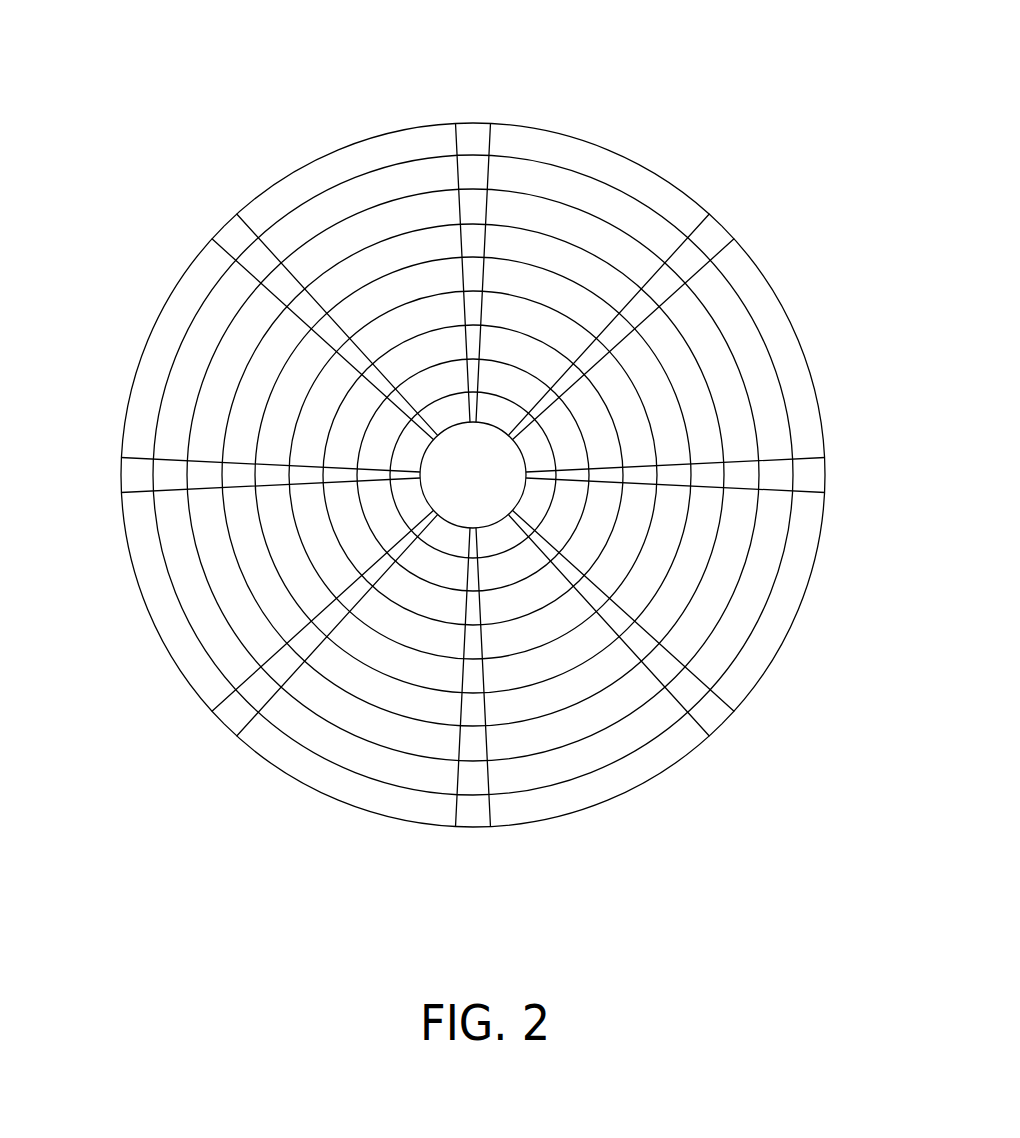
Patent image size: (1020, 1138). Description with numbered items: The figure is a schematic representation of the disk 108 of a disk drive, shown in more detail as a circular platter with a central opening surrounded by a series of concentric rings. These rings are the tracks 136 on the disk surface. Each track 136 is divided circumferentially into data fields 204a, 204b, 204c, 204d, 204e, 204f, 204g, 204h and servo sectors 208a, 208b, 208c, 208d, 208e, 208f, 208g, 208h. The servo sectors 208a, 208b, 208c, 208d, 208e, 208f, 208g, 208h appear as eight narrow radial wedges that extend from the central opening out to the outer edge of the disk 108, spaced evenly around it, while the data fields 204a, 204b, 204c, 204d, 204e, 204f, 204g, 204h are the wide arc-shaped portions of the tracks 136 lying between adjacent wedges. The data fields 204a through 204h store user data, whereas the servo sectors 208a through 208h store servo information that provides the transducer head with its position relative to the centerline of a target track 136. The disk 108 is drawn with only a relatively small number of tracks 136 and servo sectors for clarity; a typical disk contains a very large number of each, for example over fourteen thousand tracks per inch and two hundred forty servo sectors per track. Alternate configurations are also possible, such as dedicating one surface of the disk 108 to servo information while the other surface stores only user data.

The disk 108 is at (432, 125).
The tracks 136 is at (594, 177).
The servo sector 208a is at (480, 125).
The servo sector 208b is at (727, 237).
The servo sector 208c is at (826, 480).
The servo sector 208d is at (719, 721).
The servo sector 208e is at (473, 828).
The servo sector 208f is at (223, 718).
The servo sector 208g is at (121, 476).
The servo sector 208h is at (224, 228).
The data field 204a is at (561, 128).
The data field 204b is at (774, 290).
The data field 204c is at (794, 615).
The data field 204d is at (654, 773).
The data field 204e is at (330, 793).
The data field 204f is at (145, 608).
The data field 204g is at (130, 395).
The data field 204h is at (350, 148).